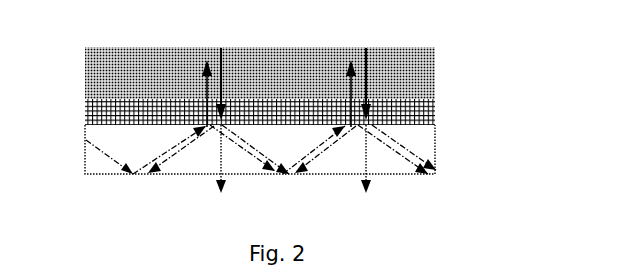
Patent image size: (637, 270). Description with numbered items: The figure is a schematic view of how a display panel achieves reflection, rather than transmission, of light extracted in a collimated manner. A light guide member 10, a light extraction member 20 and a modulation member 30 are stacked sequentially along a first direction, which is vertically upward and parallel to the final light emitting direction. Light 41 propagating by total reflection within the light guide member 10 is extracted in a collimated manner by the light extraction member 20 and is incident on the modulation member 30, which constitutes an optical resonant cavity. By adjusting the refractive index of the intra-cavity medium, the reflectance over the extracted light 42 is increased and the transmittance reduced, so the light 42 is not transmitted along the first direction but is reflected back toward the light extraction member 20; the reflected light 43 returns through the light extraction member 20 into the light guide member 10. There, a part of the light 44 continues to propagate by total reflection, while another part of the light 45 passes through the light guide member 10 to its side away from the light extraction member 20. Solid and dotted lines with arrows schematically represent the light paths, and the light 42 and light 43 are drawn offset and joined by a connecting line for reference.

The light guide member 10 is at (430, 145).
The light extraction member 20 is at (435, 101).
The modulation member 30 is at (435, 64).
The light propagating by total reflection 41 is at (317, 157).
The extracted light 42 is at (192, 84).
The reflected light 43 is at (228, 50).
The returning light part propagating by total reflection 44 is at (178, 163).
The light part passing through light guide member 45 is at (222, 160).